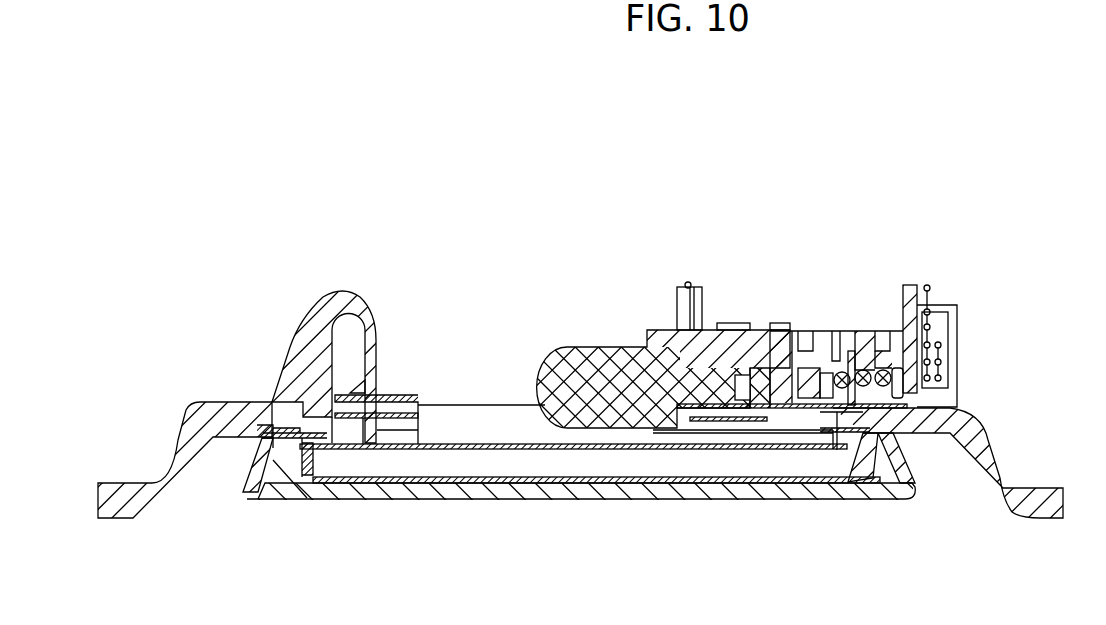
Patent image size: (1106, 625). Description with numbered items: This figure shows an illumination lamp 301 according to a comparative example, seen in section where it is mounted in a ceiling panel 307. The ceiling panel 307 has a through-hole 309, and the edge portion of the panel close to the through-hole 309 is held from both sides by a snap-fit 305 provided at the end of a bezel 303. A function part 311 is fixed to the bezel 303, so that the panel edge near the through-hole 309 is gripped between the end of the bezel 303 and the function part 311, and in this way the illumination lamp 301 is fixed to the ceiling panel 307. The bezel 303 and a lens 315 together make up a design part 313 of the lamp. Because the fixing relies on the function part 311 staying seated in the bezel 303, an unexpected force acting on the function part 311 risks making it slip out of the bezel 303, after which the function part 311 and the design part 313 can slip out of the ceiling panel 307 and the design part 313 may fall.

The illumination lamp 301 is at (890, 158).
The bezel 303 is at (448, 405).
The snap-fit 305 is at (340, 292).
The ceiling panel 307 is at (982, 433).
The through-hole 309 is at (508, 420).
The function part 311 is at (853, 325).
The design part 313 is at (700, 503).
The lens 315 is at (587, 503).